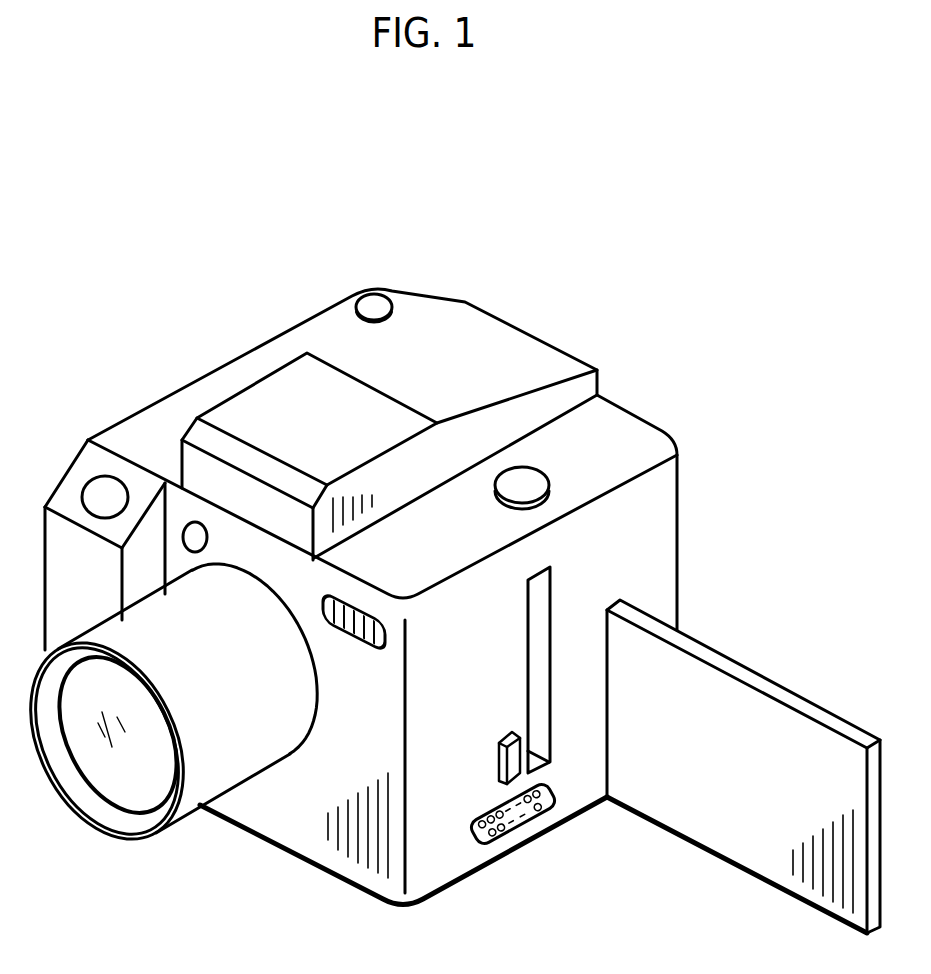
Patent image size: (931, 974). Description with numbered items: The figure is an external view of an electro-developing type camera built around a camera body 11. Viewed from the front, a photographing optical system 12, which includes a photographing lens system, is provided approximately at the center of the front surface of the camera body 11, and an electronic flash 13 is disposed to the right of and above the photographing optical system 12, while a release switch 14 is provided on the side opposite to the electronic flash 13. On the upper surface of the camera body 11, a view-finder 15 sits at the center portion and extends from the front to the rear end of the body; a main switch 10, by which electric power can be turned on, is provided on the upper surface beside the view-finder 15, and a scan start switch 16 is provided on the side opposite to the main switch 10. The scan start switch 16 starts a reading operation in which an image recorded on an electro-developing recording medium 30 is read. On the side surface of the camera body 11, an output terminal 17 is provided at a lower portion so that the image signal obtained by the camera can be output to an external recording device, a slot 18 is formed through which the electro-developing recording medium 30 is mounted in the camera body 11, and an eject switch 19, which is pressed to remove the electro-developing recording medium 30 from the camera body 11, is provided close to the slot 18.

The main switch 10 is at (378, 303).
The camera body 11 is at (312, 873).
The photographing optical system 12 is at (130, 773).
The electronic flash 13 is at (355, 652).
The release switch 14 is at (105, 495).
The view-finder 15 is at (282, 403).
The scan start switch 16 is at (523, 480).
The output terminal 17 is at (500, 838).
The slot 18 is at (538, 722).
The eject switch 19 is at (497, 762).
The electro-developing recording medium 30 is at (740, 842).